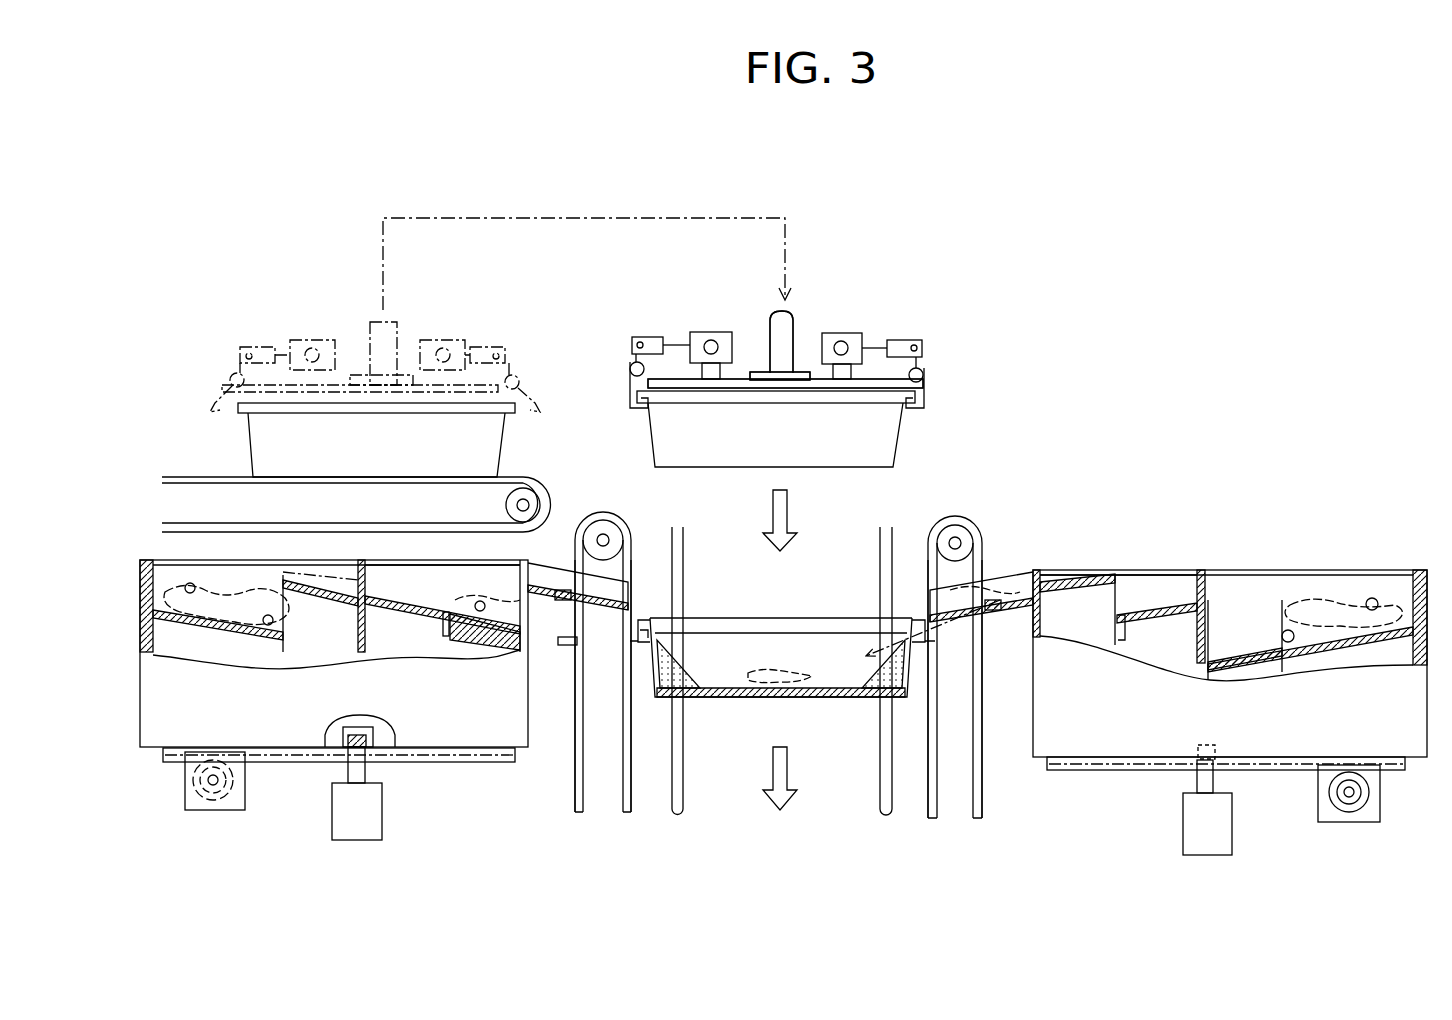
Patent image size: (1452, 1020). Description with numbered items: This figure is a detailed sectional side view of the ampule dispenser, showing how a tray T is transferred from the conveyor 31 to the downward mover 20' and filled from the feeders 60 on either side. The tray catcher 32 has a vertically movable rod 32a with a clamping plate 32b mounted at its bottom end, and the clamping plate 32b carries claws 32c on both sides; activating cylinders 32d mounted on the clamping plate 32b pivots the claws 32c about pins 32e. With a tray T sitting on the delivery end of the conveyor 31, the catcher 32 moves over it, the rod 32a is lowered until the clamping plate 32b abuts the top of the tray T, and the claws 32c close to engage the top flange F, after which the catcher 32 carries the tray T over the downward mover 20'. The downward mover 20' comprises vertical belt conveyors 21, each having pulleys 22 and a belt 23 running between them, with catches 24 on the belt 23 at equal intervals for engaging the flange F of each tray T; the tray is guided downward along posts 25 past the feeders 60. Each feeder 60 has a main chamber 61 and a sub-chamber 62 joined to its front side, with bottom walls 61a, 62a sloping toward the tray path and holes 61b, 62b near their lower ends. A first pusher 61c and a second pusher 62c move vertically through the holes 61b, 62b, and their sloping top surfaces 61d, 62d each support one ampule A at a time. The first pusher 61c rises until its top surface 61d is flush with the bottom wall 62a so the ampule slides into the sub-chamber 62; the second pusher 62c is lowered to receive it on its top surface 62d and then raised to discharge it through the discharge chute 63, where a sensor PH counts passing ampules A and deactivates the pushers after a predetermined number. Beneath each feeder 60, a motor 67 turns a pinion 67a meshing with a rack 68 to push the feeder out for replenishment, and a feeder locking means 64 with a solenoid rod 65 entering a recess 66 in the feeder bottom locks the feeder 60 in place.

The downward mover 20' is at (787, 721).
The vertical belt conveyor 21 is at (573, 783).
The pulley 22 is at (625, 540).
The belt 23 is at (573, 745).
The catch 24 is at (568, 645).
The guide post 25 is at (680, 782).
The conveyor 31 is at (190, 477).
The tray catcher 32 is at (666, 324).
The vertically movable rod 32a is at (790, 330).
The clamping plate 32b is at (868, 380).
The claw 32c is at (630, 390).
The cylinder 32d is at (718, 332).
The pin 32e is at (632, 360).
The feeder 60 is at (207, 557).
The main chamber 61 is at (255, 572).
The bottom wall 61a is at (195, 620).
The hole 61b is at (288, 642).
The first pusher 61c is at (312, 608).
The top surface 61d is at (1225, 600).
The sub-chamber 62 is at (395, 578).
The bottom wall 62a is at (410, 612).
The hole 62b is at (462, 622).
The second pusher 62c is at (486, 600).
The top surface 62d is at (1073, 585).
The discharge chute 63 is at (633, 585).
The feeder locking means 64 is at (365, 840).
The solenoid rod 65 is at (363, 772).
The recess 66 is at (373, 755).
The motor 67 is at (238, 808).
The pinion 67a is at (205, 815).
The rack 68 is at (300, 775).
The ampule A is at (1348, 602).
The top flange F is at (637, 400).
The sensor PH is at (562, 590).
The tray T is at (655, 440).